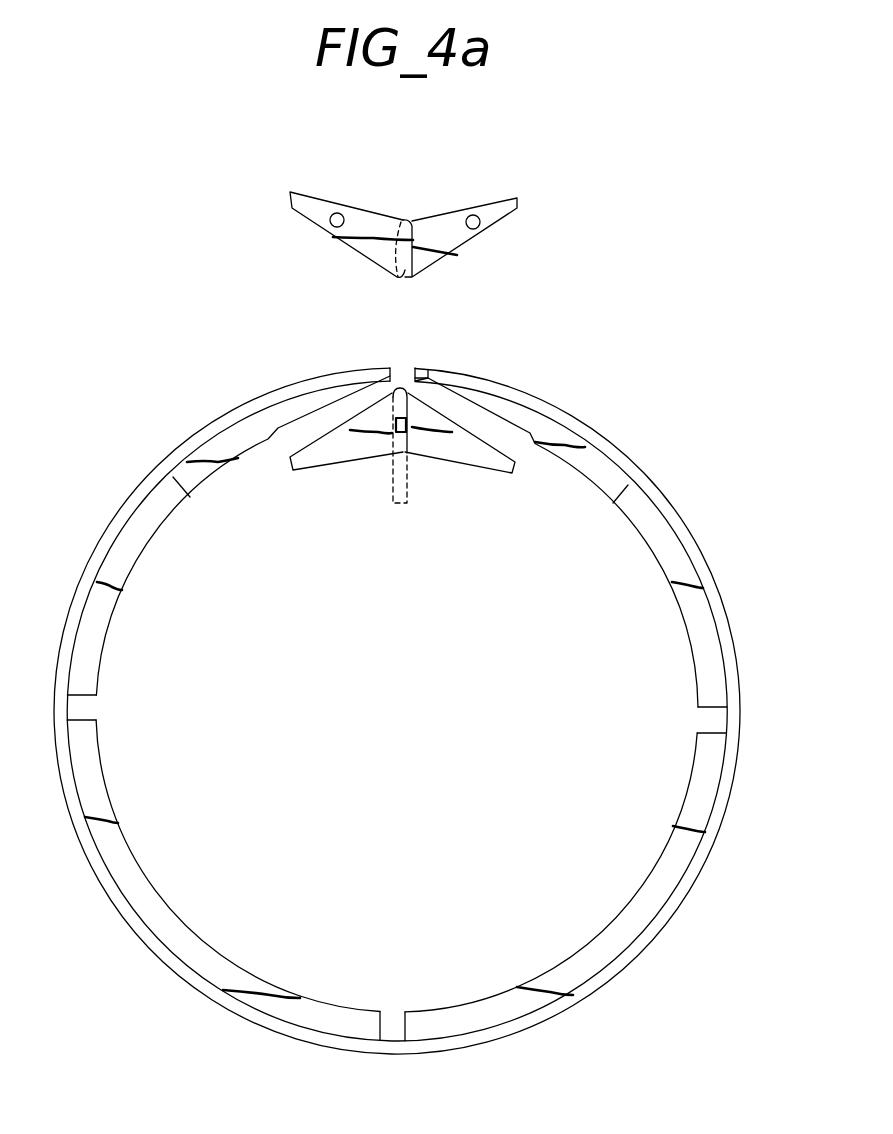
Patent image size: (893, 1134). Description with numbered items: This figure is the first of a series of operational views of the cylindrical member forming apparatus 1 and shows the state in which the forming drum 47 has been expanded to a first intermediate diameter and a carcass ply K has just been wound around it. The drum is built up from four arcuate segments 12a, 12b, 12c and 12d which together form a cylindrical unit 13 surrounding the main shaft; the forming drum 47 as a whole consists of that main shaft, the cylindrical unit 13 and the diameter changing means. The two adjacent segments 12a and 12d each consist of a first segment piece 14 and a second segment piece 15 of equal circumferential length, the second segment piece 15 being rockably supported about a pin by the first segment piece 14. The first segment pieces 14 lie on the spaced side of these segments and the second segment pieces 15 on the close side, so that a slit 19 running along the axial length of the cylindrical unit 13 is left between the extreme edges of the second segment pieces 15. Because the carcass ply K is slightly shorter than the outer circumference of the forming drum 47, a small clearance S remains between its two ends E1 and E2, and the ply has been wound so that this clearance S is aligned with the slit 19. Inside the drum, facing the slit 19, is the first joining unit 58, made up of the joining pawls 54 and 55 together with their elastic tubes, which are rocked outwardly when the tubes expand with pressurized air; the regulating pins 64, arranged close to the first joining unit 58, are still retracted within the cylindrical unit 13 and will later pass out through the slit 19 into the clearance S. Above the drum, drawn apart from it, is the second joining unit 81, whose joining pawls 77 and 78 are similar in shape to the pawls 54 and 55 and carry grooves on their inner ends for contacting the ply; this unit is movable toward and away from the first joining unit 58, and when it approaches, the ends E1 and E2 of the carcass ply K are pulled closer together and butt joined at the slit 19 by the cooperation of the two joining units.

The apparatus 1 is at (412, 701).
The arcuate segment 12a is at (142, 557).
The arcuate segment 12b is at (143, 862).
The arcuate segment 12c is at (568, 957).
The arcuate segment 12d is at (643, 543).
The cylindrical unit 13 is at (277, 983).
The first segment piece 14 is at (110, 607).
The second segment piece 15 is at (237, 455).
The slit 19 is at (428, 377).
The forming drum 47 is at (725, 607).
The carcass ply K is at (688, 538).
The joining pawl 54 is at (352, 448).
The joining pawl 55 is at (477, 458).
The first joining unit 58 is at (402, 459).
The regulating pin 64 is at (403, 497).
The joining pawl 77 is at (358, 212).
The joining pawl 78 is at (452, 220).
The second joining unit 81 is at (430, 212).
The end of the carcass ply E1 is at (390, 368).
The end of the carcass ply E2 is at (417, 368).
The clearance S is at (400, 367).